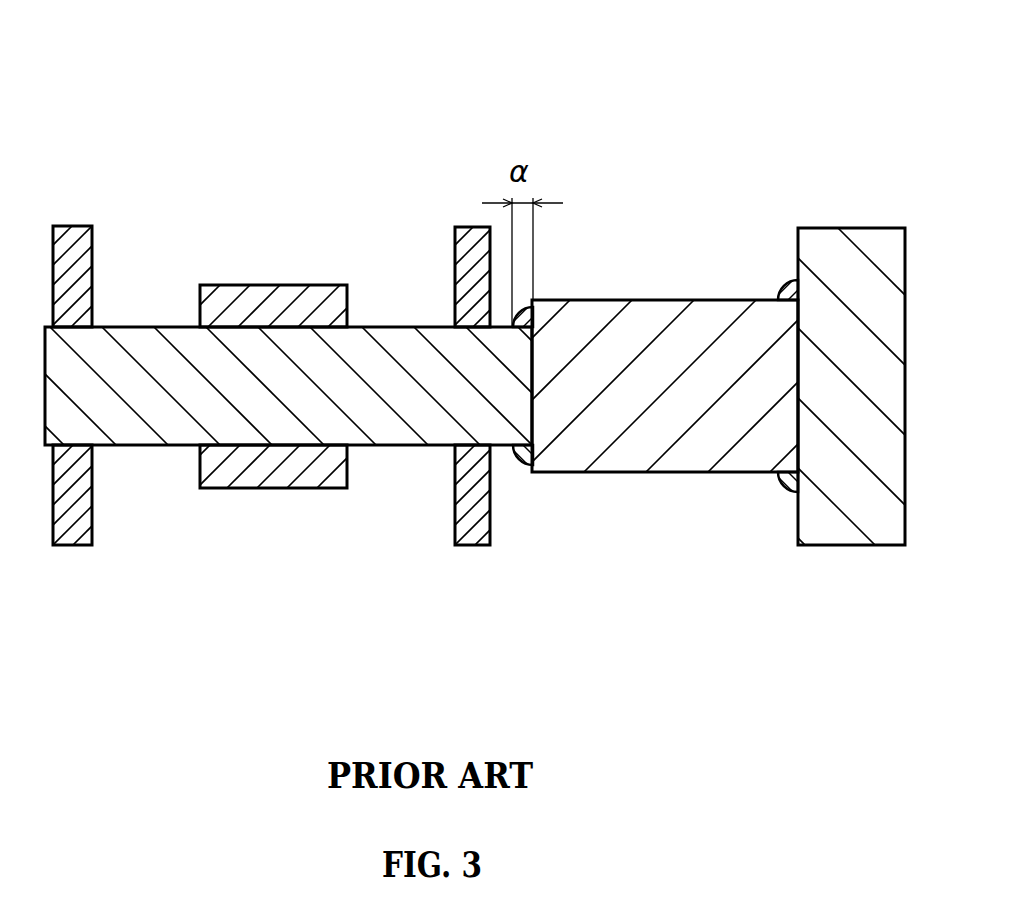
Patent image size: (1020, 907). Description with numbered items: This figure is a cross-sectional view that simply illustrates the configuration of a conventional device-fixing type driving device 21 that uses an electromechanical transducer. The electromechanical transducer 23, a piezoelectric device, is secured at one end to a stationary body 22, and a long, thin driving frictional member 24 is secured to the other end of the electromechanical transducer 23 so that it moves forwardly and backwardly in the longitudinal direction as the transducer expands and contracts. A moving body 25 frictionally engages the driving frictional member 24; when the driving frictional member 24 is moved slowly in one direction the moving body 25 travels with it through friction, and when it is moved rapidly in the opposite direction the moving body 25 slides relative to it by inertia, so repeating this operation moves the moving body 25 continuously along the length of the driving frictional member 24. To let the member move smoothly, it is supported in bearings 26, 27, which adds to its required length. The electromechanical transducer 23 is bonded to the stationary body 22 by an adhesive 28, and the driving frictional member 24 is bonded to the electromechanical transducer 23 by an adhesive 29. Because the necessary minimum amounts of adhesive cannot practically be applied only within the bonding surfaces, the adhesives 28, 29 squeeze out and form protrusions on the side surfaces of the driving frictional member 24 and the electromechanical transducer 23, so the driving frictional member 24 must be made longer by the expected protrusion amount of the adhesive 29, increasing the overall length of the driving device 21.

The device-fixing type driving device 21 is at (155, 165).
The stationary body 22 is at (863, 228).
The electromechanical transducer 23 is at (707, 300).
The driving frictional member 24 is at (377, 327).
The moving body 25 is at (265, 285).
The bearing 26 is at (472, 227).
The bearing 27 is at (75, 226).
The adhesive 28 is at (783, 282).
The adhesive 29 is at (524, 312).